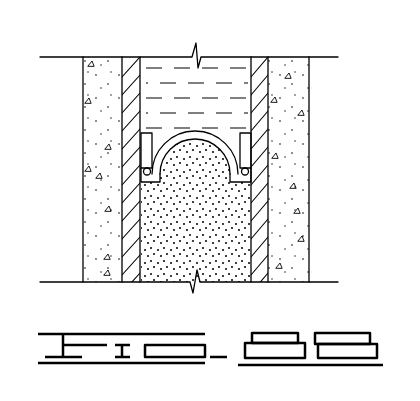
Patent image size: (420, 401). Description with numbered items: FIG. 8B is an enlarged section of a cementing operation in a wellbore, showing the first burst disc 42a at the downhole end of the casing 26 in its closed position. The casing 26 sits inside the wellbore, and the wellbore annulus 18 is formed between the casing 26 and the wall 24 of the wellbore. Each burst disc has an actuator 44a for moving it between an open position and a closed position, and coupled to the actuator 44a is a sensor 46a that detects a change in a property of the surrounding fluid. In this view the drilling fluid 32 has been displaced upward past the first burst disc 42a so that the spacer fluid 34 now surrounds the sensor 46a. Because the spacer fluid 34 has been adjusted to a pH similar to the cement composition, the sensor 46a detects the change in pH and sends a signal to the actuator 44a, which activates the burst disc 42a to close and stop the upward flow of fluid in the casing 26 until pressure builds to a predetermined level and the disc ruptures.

The wellbore annulus 18 is at (292, 198).
The wall 24 is at (309, 241).
The casing 26 is at (260, 100).
The drilling fluid 32 is at (233, 72).
The spacer fluid 34 is at (222, 255).
The first burst disc 42a is at (230, 167).
The actuator 44a is at (143, 172).
The sensor 46a is at (147, 148).